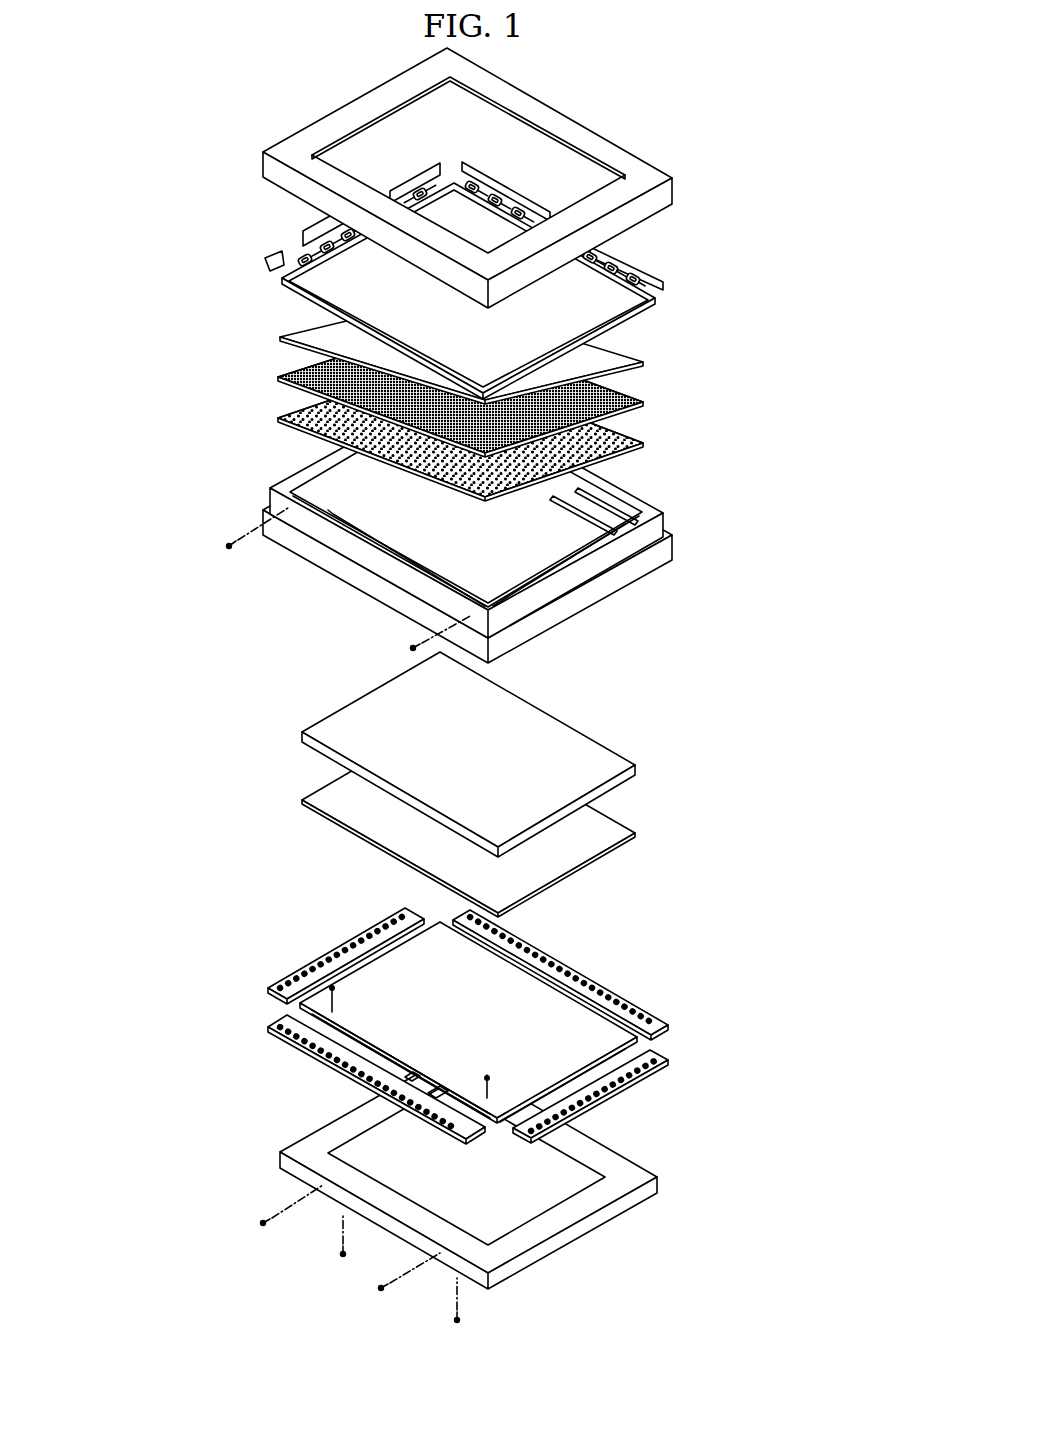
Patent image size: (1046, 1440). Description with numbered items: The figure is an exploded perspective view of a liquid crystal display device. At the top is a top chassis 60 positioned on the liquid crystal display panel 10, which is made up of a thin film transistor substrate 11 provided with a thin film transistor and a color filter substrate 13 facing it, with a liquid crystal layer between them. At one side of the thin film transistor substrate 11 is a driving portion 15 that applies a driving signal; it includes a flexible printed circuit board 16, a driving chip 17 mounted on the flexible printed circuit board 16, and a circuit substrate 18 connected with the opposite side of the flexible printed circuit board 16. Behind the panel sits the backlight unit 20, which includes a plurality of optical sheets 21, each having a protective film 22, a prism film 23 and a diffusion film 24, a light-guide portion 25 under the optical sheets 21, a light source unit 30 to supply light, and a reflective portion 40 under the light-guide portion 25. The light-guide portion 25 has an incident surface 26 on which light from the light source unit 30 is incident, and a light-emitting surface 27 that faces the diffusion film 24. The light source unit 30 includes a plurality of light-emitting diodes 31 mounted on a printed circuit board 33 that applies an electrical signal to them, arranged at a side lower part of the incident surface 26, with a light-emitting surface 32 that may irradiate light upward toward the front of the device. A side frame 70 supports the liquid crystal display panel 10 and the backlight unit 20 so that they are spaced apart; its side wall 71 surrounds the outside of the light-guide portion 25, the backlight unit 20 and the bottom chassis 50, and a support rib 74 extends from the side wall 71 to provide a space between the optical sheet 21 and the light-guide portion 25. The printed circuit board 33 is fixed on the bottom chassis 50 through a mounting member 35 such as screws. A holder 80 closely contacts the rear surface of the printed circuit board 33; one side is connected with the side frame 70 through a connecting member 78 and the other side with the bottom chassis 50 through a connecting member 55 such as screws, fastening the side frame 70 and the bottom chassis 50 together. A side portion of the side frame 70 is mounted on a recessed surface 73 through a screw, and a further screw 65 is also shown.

The liquid crystal display panel 10 is at (464, 280).
The thin film transistor substrate 11 is at (628, 318).
The color filter substrate 13 is at (660, 285).
The driving portion 15 is at (406, 231).
The flexible printed circuit board 16 is at (243, 275).
The driving chip 17 is at (297, 258).
The circuit substrate 18 is at (303, 231).
The backlight unit 20 is at (520, 879).
The optical sheets 21 is at (528, 400).
The protective film 22 is at (503, 351).
The prism film 23 is at (633, 402).
The diffusion film 24 is at (640, 445).
The light-guide portion 25 is at (513, 754).
The incident surface 26 is at (615, 786).
The light-emitting surface 27 is at (575, 741).
The light source unit 30 is at (507, 1026).
The light-emitting diodes 31 is at (658, 1073).
The light-emitting surface 32 is at (628, 1000).
The printed circuit board 33 is at (648, 1054).
The mounting member 35 is at (320, 972).
The reflective portion 40 is at (618, 847).
The bottom chassis 50 is at (545, 1000).
The connecting member 55 is at (340, 1253).
The top chassis 60 is at (645, 166).
The screw 65 is at (225, 546).
The side frame 70 is at (516, 527).
The side wall 71 is at (640, 568).
The recessed surface 73 is at (572, 577).
The support rib 74 is at (620, 510).
The connecting member 78 is at (260, 1222).
The holder 80 is at (630, 1168).